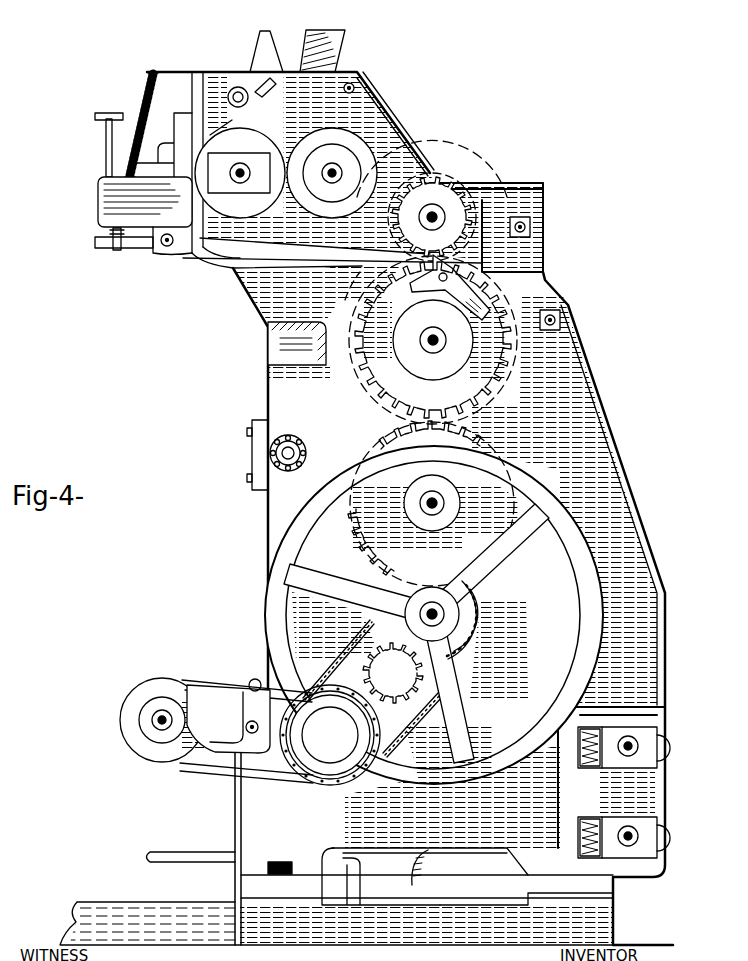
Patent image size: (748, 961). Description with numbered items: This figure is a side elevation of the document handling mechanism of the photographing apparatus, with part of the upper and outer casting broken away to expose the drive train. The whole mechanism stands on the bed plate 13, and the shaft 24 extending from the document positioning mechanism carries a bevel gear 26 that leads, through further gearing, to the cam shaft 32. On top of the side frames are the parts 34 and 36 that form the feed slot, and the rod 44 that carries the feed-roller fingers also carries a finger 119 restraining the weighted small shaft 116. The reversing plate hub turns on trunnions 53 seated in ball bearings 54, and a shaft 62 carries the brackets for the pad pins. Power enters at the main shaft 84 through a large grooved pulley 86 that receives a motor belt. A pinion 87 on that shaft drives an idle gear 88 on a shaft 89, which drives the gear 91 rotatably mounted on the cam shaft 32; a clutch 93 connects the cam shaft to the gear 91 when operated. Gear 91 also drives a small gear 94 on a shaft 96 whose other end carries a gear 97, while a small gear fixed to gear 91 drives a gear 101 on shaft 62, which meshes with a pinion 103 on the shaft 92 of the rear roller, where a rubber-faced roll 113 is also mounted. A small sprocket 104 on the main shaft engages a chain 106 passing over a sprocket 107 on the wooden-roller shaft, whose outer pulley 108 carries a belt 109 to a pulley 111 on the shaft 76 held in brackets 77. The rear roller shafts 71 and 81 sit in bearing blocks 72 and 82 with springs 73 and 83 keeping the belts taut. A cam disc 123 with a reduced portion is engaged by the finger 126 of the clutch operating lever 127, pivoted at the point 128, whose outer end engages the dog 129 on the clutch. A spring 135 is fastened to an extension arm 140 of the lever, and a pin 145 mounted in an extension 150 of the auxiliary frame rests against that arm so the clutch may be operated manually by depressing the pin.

The bed plate 13 is at (100, 910).
The shaft 24 is at (182, 864).
The bevel gear 26 is at (430, 873).
The cam shaft 32 is at (433, 342).
The feed slot part 34 is at (340, 47).
The feed slot part 36 is at (259, 47).
The rod 44 is at (248, 95).
The trunnions 53 is at (305, 450).
The ball bearings 54 is at (303, 458).
The shaft 62 is at (348, 308).
The shaft 71 is at (640, 745).
The bearing blocks 72 is at (650, 755).
The springs 73 is at (594, 766).
The shaft 76 is at (158, 720).
The brackets 77 is at (228, 716).
The shaft 81 is at (640, 833).
The bearing blocks 82 is at (650, 845).
The springs 83 is at (583, 843).
The main shaft 84 is at (440, 613).
The large grooved pulley 86 is at (582, 642).
The pinion 87 is at (368, 575).
The idle gear 88 is at (393, 447).
The shaft 89 is at (430, 516).
The gear 91 is at (352, 377).
The shaft 92 is at (332, 165).
The clutch 93 is at (520, 366).
The small gear 94 is at (455, 173).
The shaft 96 is at (440, 228).
The gear 97 is at (448, 150).
The gear 101 is at (365, 268).
The pinion 103 is at (362, 125).
The small sprocket 104 is at (362, 628).
The chain 106 is at (420, 692).
The sprocket 107 is at (387, 673).
The pulley 108 is at (340, 782).
The belt 109 is at (215, 767).
The pulley 111 is at (148, 752).
The roll 113 is at (385, 140).
The small shaft 116 is at (240, 164).
The finger 119 is at (212, 137).
The cam disc 123 is at (248, 136).
The finger 126 is at (135, 164).
The clutch operating lever 127 is at (218, 263).
The pivot point 128 is at (166, 247).
The dog 129 is at (483, 297).
The spring 135 is at (145, 100).
The extension arm 140 is at (117, 247).
The pin 145 is at (106, 135).
The extension 150 is at (105, 207).